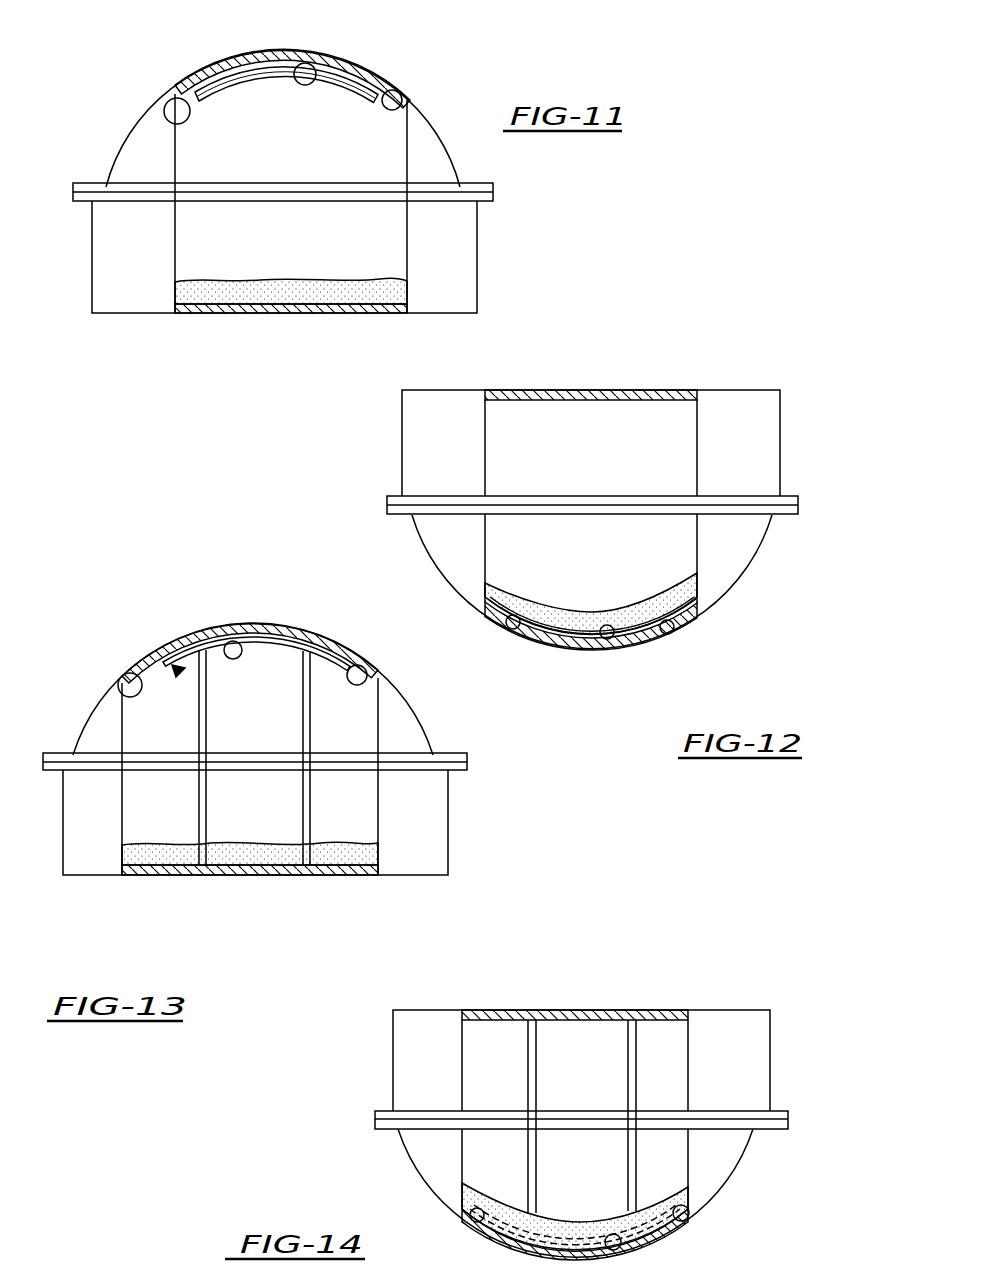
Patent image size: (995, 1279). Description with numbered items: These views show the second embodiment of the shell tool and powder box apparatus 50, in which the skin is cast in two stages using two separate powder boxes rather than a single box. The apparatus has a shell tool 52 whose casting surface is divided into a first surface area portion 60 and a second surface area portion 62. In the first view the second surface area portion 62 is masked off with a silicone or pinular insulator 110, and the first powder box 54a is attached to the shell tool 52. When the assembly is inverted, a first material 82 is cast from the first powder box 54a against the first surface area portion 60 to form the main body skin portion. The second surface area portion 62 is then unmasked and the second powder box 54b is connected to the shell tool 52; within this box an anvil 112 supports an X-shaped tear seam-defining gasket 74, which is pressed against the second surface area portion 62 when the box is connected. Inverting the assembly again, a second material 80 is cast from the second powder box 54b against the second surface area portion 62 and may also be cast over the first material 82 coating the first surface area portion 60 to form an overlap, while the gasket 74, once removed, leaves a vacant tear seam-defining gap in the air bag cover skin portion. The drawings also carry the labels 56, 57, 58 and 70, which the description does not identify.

In FIG. 11, the shell tool and powder box apparatus 50 is at (64, 187).
In FIG. 12, the shell tool and powder box apparatus 50 is at (777, 538).
In FIG. 13, the shell tool and powder box apparatus 50 is at (433, 882).
In FIG. 14, the shell tool and powder box apparatus 50 is at (772, 1022).
In FIG. 11, the shell tool 52 is at (125, 140).
In FIG. 12, the shell tool 52 is at (720, 600).
In FIG. 13, the shell tool 52 is at (82, 725).
In FIG. 11, the first powder box 54a is at (90, 262).
In FIG. 12, the first powder box 54a is at (782, 432).
In FIG. 13, the second powder box 54b is at (63, 843).
In FIG. 14, the second powder box 54b is at (400, 1048).
In FIG. 11, the flange plate (56') 56 is at (90, 183).
In FIG. 12, the flange plate (56') 56 is at (782, 515).
In FIG. 13, the flange plate (56') 56 is at (465, 753).
In FIG. 14, the flange plate (56') 56 is at (787, 1130).
In FIG. 11, the flange plate lower layer (57') 57 is at (80, 201).
In FIG. 12, the flange plate lower layer (57') 57 is at (785, 496).
In FIG. 13, the flange plate lower layer (57') 57 is at (467, 770).
In FIG. 14, the flange plate lower layer (57') 57 is at (787, 1111).
In FIG. 11, the left retaining loop (58') 58 is at (175, 98).
In FIG. 13, the left retaining loop (58') 58 is at (118, 678).
In FIG. 14, the left retaining loop (58') 58 is at (470, 1213).
In FIG. 11, the first surface area portion 60 is at (395, 90).
In FIG. 13, the first surface area portion 60 is at (368, 676).
In FIG. 14, the first surface area portion 60 is at (697, 1200).
In FIG. 11, the second surface area portion 62 is at (306, 62).
In FIG. 12, the second surface area portion 62 is at (592, 636).
In FIG. 13, the second surface area portion 62 is at (225, 642).
In FIG. 14, the second surface area portion 62 is at (630, 1238).
In FIG. 13, the direction arrow (70') 70 is at (180, 675).
In FIG. 13, the tear seam-defining gasket 74 is at (195, 640).
In FIG. 14, the tear seam-defining gasket 74 is at (550, 1240).
In FIG. 13, the second material 80 is at (227, 862).
In FIG. 14, the second material 80 is at (592, 1220).
In FIG. 11, the first material 82 is at (180, 306).
In FIG. 12, the first material 82 is at (513, 615).
In FIG. 11, the silicone or pinular insulator 110 is at (237, 68).
In FIG. 12, the silicone or pinular insulator 110 is at (663, 620).
In FIG. 13, the anvil 112 is at (200, 815).
In FIG. 14, the anvil 112 is at (633, 1043).